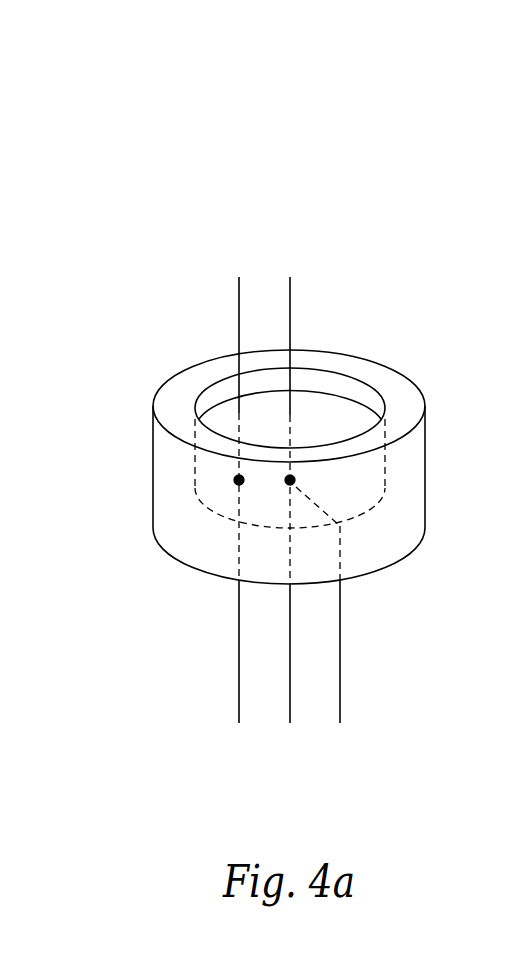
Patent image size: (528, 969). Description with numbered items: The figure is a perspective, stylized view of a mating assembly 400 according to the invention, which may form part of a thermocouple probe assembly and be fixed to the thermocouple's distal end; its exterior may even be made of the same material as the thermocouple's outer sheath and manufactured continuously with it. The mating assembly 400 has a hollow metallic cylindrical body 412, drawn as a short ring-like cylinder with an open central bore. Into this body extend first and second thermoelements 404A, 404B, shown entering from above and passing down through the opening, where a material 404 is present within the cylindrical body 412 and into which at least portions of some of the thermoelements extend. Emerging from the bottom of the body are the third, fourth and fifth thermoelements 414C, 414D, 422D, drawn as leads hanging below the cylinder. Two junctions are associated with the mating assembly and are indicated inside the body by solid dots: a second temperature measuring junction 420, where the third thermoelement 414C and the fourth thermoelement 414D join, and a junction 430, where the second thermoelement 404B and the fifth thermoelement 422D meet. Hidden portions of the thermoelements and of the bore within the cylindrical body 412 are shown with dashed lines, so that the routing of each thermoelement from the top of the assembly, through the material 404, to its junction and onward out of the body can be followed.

The mating assembly 400 is at (173, 66).
The hollow metallic cylindrical body 412 is at (427, 450).
The material 404 is at (335, 413).
The first thermoelement 404A is at (290, 292).
The second thermoelement 404B is at (239, 315).
The fifth thermoelement 422D is at (239, 696).
The fourth thermoelement 414D is at (289, 692).
The third thermoelement 414C is at (341, 695).
The junction 430 is at (236, 480).
The second temperature measuring junction 420 is at (295, 478).